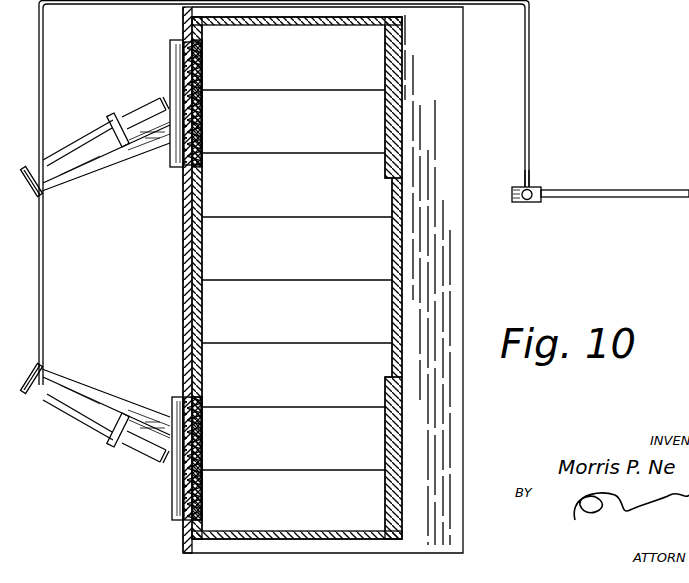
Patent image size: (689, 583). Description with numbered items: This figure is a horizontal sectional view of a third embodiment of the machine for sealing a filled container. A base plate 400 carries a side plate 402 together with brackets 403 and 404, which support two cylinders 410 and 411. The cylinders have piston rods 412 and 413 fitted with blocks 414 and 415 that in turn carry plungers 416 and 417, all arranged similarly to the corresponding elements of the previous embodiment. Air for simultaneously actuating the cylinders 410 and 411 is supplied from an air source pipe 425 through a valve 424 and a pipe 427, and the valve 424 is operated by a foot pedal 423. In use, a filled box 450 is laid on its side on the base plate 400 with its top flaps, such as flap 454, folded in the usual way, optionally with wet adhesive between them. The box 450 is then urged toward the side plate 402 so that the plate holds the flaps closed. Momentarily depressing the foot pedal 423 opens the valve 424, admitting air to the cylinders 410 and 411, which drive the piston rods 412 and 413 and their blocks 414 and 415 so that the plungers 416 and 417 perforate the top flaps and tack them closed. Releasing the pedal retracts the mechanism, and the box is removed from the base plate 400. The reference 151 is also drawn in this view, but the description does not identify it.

The base plate 400 is at (458, 298).
The side plate 402 is at (183, 252).
The bracket 403 is at (93, 383).
The bracket 404 is at (64, 188).
The cylinder 410 is at (60, 407).
The cylinder 411 is at (90, 126).
The piston rod 412 is at (130, 445).
The piston rod 413 is at (146, 101).
The block 414 is at (180, 494).
The block 415 is at (176, 52).
The plunger 416 is at (203, 442).
The plunger 417 is at (200, 78).
The foot pedal 423 is at (519, 201).
The valve 424 is at (515, 189).
The air source pipe 425 is at (600, 191).
The pipe 427 is at (530, 128).
The filled box 450 is at (400, 372).
The top flap 454 is at (200, 262).
The inner lining wall 151 is at (383, 305).